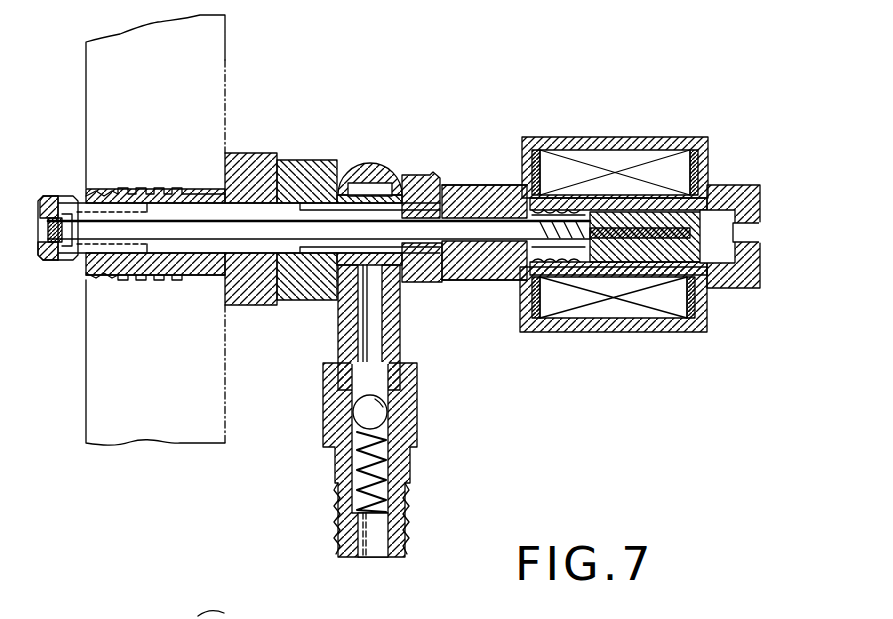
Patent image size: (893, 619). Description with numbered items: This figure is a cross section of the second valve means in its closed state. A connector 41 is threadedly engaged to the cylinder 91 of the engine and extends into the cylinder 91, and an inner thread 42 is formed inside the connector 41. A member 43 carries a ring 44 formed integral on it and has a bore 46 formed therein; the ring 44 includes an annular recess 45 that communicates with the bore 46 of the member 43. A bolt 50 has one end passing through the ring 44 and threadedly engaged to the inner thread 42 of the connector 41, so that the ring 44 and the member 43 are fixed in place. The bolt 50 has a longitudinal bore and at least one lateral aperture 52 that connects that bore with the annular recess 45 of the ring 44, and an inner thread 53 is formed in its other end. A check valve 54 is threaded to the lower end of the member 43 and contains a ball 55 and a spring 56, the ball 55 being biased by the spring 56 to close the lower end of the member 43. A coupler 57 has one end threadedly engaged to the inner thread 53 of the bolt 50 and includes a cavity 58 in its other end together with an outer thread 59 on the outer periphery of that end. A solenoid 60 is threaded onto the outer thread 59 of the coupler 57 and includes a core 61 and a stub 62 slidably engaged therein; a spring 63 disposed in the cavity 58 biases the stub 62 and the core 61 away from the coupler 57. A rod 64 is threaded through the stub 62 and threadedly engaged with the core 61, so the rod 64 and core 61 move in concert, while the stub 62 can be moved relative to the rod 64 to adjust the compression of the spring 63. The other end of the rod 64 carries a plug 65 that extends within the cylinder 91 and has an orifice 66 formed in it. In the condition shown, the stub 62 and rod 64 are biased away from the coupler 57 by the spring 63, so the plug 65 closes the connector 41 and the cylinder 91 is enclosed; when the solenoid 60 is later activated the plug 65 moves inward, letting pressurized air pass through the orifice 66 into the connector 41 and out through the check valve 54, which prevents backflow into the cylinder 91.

The cylinder 91 is at (215, 50).
The connector 41 is at (298, 175).
The inner thread 42 is at (307, 300).
The member 43 is at (402, 316).
The ring 44 is at (353, 157).
The annular recess 45 is at (393, 187).
The bore 46 is at (378, 323).
The bolt 50 is at (433, 180).
The aperture 52 is at (372, 190).
The inner thread 53 is at (482, 185).
The check valve 54 is at (405, 520).
The ball 55 is at (362, 414).
The spring 56 is at (382, 472).
The coupler 57 is at (490, 188).
The cavity 58 is at (577, 330).
The outer thread 59 is at (553, 205).
The solenoid 60 is at (688, 148).
The core 61 is at (730, 198).
The stub 62 is at (625, 255).
The spring 63 is at (578, 248).
The rod 64 is at (490, 232).
The plug 65 is at (47, 194).
The orifice 66 is at (72, 197).